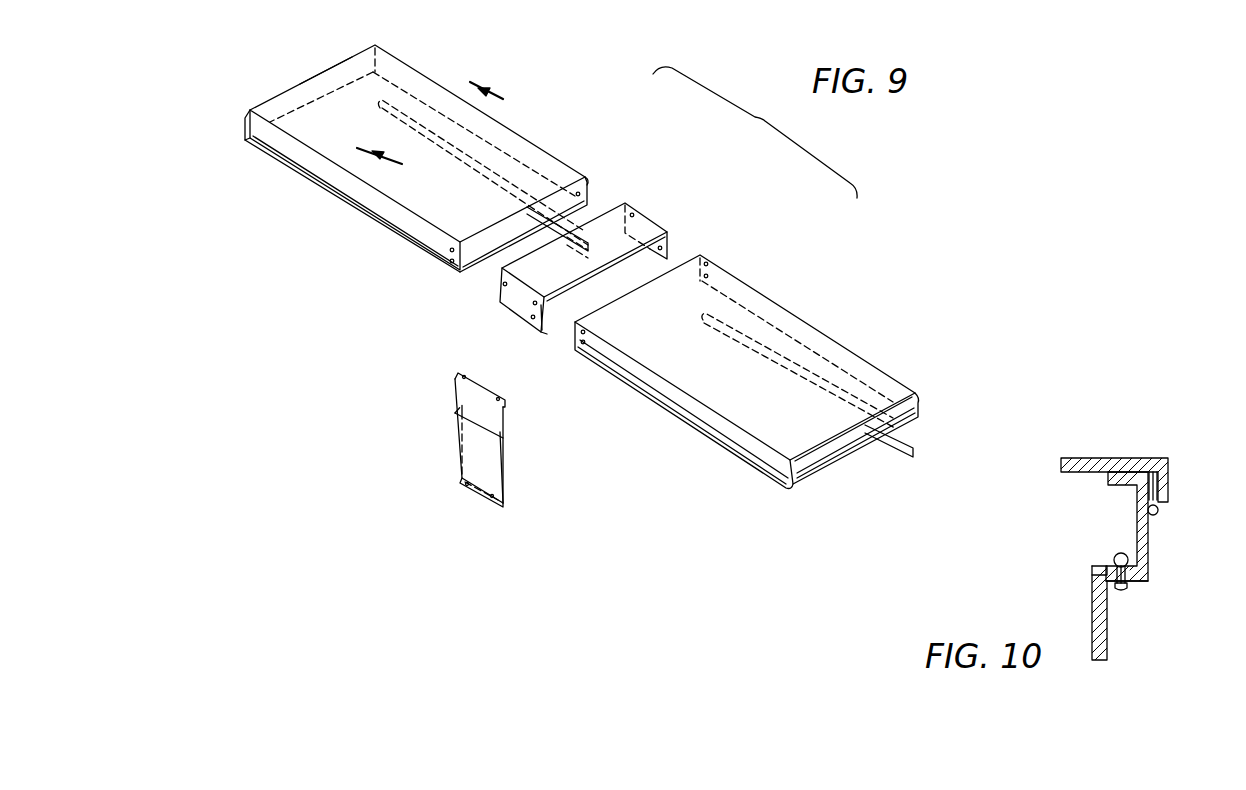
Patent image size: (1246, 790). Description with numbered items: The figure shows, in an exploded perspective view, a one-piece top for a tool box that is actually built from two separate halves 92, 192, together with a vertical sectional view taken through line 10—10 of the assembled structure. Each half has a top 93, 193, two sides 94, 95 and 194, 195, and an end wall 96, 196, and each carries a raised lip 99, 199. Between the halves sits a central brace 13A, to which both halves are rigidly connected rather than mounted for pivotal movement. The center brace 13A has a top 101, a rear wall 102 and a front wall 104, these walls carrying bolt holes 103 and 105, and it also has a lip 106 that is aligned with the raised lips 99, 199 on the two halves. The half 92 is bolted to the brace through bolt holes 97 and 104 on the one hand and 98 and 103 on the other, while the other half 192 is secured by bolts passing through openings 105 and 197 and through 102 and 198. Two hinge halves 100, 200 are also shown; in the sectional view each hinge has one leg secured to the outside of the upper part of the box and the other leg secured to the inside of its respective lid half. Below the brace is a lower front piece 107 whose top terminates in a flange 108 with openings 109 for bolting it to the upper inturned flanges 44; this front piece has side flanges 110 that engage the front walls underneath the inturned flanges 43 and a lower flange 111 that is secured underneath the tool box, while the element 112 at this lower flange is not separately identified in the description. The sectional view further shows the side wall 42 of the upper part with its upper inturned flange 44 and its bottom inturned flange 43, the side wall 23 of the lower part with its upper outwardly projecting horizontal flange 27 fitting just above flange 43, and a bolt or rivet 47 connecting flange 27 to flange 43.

In FIG. 9, the half 92 is at (248, 95).
In FIG. 9, the top 93 is at (352, 127).
In FIG. 9, the side 94 is at (295, 160).
In FIG. 9, the side 95 is at (533, 140).
In FIG. 9, the end wall 96 is at (327, 78).
In FIG. 9, the bolt hole 97 is at (452, 258).
In FIG. 9, the bolt hole 98 is at (590, 192).
In FIG. 9, the raised lip 99 is at (353, 210).
In FIG. 9, the hinge half 100 is at (543, 228).
In FIG. 10, the hinge half 100 is at (1160, 507).
In FIG. 9, the top 101 is at (567, 274).
In FIG. 9, the rear wall 102 is at (670, 247).
In FIG. 9, the bolt hole 103 is at (640, 217).
In FIG. 9, the front wall 104 is at (500, 283).
In FIG. 9, the bolt hole 105 is at (550, 307).
In FIG. 9, the lip 106 is at (522, 325).
In FIG. 9, the front piece 107 is at (477, 448).
In FIG. 9, the flange 108 is at (453, 377).
In FIG. 9, the openings 109 is at (487, 383).
In FIG. 9, the side flanges 110 is at (505, 443).
In FIG. 9, the lower flange 111 is at (510, 497).
In FIG. 9, the holes 112 is at (487, 502).
In FIG. 9, the line 10— 10 is at (437, 122).
In FIG. 9, the central brace 13A is at (684, 214).
In FIG. 9, the half 192 is at (868, 290).
In FIG. 9, the top 193 is at (709, 367).
In FIG. 9, the side 194 is at (768, 453).
In FIG. 9, the side 195 is at (877, 377).
In FIG. 9, the end wall 196 is at (835, 452).
In FIG. 9, the opening 197 is at (585, 340).
In FIG. 9, the opening 198 is at (717, 275).
In FIG. 9, the raised lip 199 is at (673, 422).
In FIG. 9, the hinge half 200 is at (913, 459).
In FIG. 10, the upper inturned flanges 44 is at (1120, 487).
In FIG. 10, the side wall 42 is at (1135, 520).
In FIG. 10, the upper outwardly projecting horizontal flange 27 is at (1108, 565).
In FIG. 10, the side wall 23 is at (1092, 600).
In FIG. 10, the bolts, rivets or the like 47 is at (1123, 590).
In FIG. 10, the inturned flanges 43 is at (1137, 587).